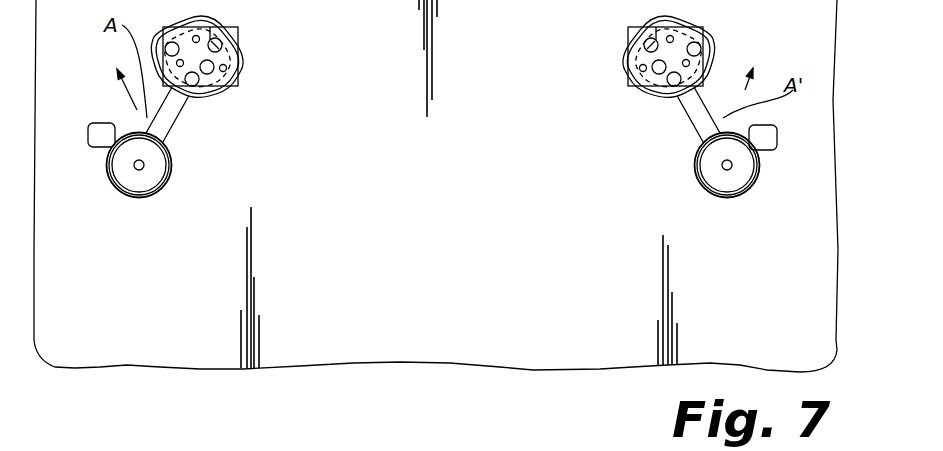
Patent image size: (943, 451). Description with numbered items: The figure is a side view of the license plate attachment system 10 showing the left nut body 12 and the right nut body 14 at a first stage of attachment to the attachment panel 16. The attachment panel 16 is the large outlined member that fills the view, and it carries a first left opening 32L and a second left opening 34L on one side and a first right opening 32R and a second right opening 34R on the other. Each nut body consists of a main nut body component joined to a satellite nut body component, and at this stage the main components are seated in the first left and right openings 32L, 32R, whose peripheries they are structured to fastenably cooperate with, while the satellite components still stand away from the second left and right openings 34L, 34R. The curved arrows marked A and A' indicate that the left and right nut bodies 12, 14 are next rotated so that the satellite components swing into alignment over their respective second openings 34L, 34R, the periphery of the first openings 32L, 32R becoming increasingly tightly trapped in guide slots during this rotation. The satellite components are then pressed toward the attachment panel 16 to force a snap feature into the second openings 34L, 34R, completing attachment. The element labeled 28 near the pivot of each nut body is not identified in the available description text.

The license plate attachment system 10 is at (505, 379).
The left nut body 12 is at (184, 133).
The right nut body 14 is at (681, 134).
The attachment panel 16 is at (559, 447).
The pivot axle 28 is at (146, 168).
The first right opening 32R is at (228, 52).
The first left opening 32L is at (617, 57).
The second right opening 34R is at (105, 123).
The second left opening 34L is at (765, 150).